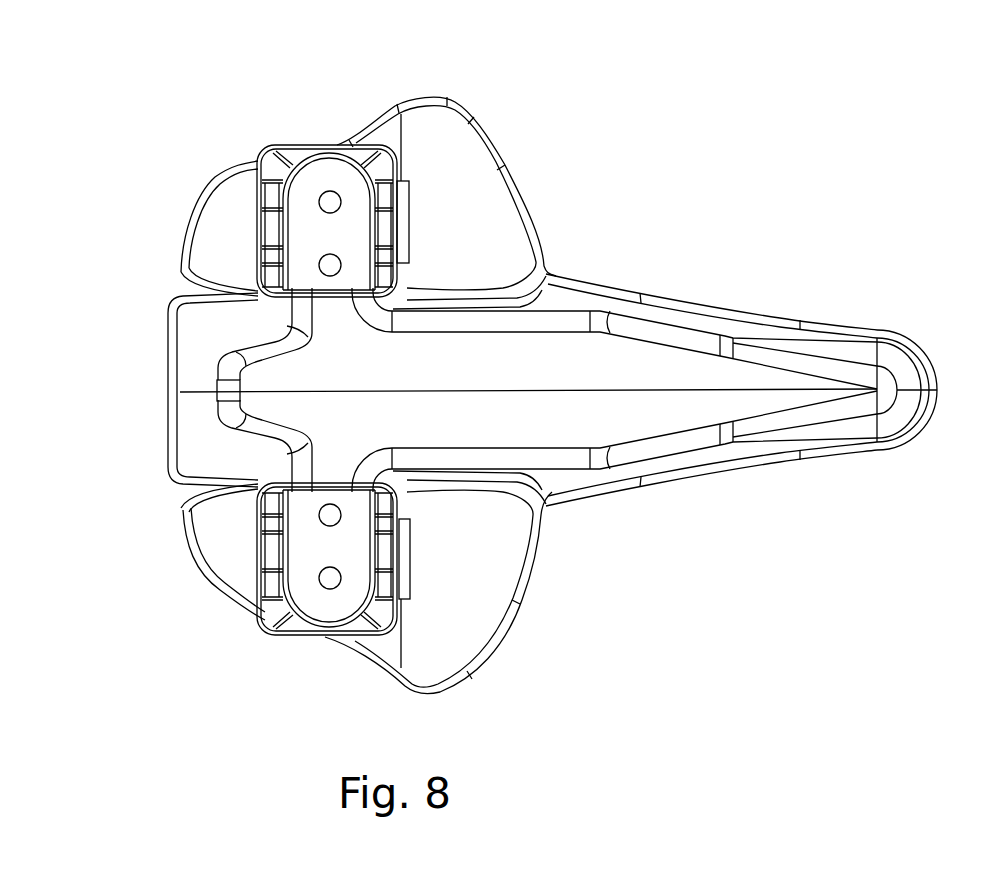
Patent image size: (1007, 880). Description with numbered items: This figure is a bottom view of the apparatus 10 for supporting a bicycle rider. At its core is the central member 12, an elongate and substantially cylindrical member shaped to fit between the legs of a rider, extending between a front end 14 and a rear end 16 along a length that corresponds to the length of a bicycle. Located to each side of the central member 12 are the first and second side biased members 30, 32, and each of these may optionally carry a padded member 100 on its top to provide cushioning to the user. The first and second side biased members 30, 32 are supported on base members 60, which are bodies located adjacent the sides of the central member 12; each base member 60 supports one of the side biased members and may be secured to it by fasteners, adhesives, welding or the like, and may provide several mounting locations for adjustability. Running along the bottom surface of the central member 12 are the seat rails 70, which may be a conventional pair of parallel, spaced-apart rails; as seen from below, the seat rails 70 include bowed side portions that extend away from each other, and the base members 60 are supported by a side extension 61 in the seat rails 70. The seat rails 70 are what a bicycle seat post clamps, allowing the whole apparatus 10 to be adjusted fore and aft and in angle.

The apparatus 10 is at (686, 148).
The central member 12 is at (825, 320).
The front end 14 is at (938, 378).
The rear end 16 is at (167, 384).
The first side biased member 30 is at (408, 215).
The second side biased member 32 is at (406, 568).
The base member 60 is at (288, 143).
The side extension 61 is at (185, 299).
The seat rail 70 is at (667, 328).
The padded member 100 is at (472, 112).